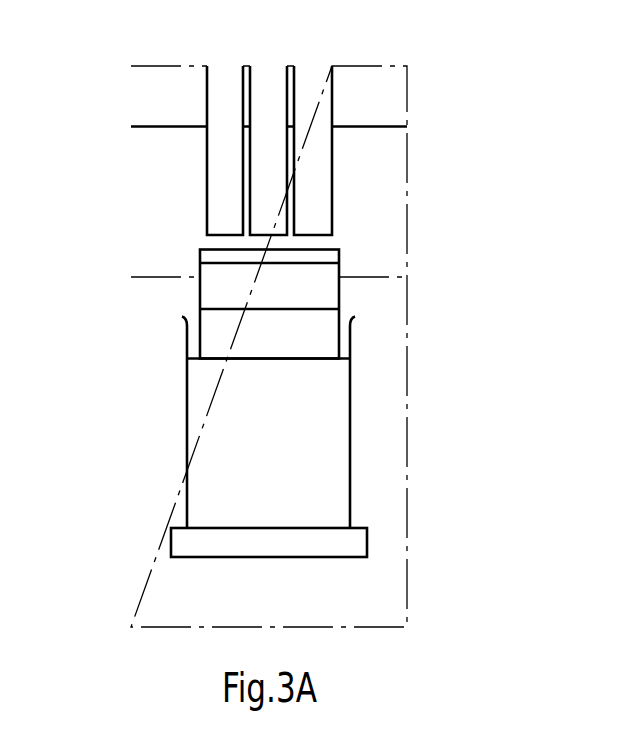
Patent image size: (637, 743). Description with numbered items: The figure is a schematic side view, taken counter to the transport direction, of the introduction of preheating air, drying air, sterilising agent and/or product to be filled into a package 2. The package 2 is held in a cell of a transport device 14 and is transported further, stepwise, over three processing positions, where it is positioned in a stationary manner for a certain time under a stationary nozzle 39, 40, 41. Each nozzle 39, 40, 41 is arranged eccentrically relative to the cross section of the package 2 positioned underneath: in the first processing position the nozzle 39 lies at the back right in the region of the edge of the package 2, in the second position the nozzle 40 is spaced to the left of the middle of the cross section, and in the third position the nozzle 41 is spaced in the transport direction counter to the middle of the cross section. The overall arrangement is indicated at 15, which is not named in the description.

The package 2 is at (221, 292).
The transport device 14 is at (185, 420).
The arrangement frame 15 is at (418, 338).
The nozzle 39 is at (223, 180).
The nozzle 40 is at (314, 162).
The nozzle 41 is at (269, 207).